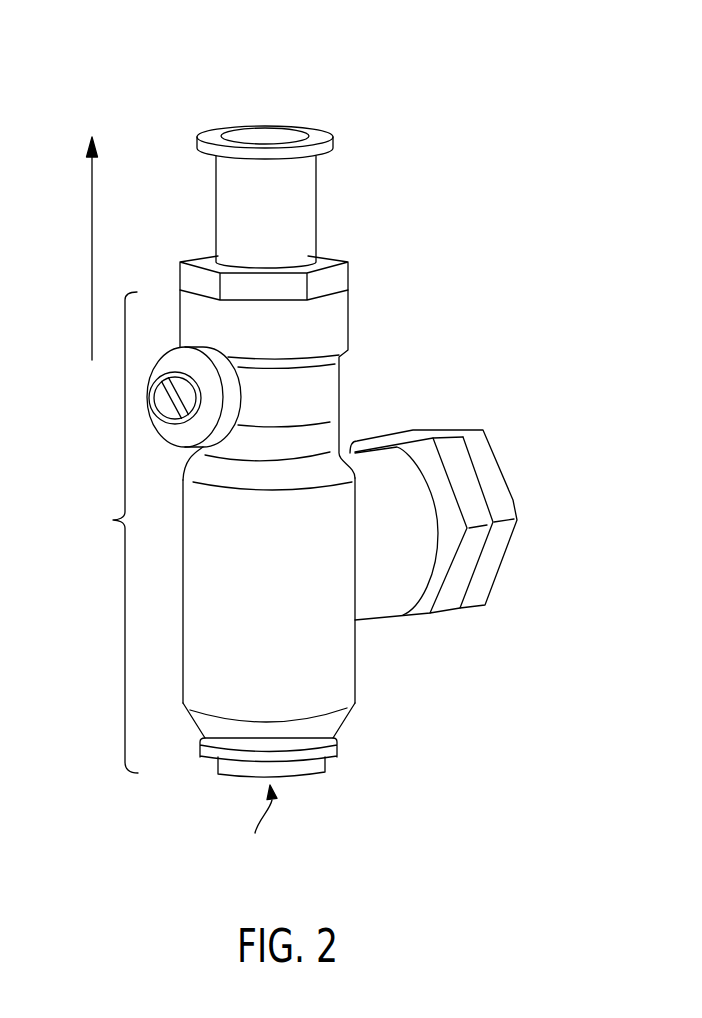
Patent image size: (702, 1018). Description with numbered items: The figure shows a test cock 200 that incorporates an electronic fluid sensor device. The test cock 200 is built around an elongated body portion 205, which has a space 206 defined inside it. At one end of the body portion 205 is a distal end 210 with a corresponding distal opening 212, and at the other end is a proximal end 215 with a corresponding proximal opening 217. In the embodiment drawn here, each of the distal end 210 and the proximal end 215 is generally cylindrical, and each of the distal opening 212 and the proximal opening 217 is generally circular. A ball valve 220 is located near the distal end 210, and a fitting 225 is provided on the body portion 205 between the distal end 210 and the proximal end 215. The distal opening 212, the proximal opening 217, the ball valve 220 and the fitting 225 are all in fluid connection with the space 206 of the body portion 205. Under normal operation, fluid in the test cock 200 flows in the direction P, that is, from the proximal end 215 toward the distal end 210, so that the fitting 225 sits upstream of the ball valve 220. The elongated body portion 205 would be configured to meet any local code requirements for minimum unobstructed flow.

The test cock 200 is at (425, 88).
The elongated body portion 205 is at (105, 532).
The space 206 is at (317, 610).
The distal end 210 is at (350, 272).
The distal opening 212 is at (317, 262).
The proximal end 215 is at (327, 750).
The proximal opening 217 is at (259, 829).
The ball valve 220 is at (327, 383).
The fitting 225 is at (505, 505).
The direction of fluid flow P is at (92, 235).